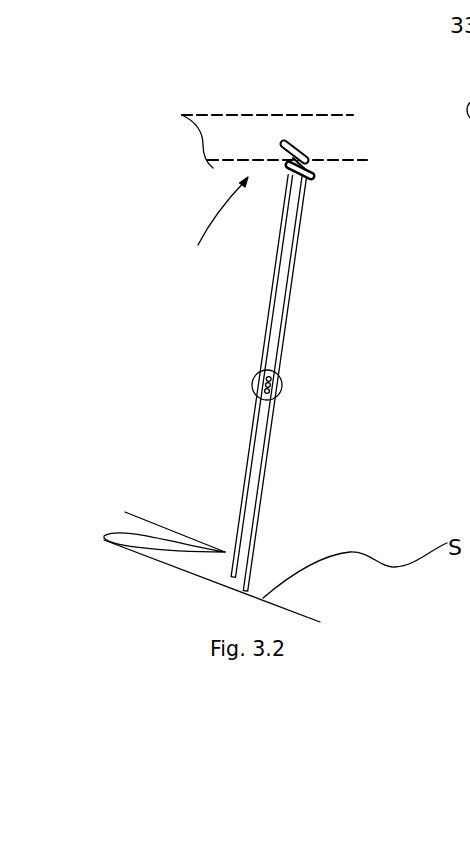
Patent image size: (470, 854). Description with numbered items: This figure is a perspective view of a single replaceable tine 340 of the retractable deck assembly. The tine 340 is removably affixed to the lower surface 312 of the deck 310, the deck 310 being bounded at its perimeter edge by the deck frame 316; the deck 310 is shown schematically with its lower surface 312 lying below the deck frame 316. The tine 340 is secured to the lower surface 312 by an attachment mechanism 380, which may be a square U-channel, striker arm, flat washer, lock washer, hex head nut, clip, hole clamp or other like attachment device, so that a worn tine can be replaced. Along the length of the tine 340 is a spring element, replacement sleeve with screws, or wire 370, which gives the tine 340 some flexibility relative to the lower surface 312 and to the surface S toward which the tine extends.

The deck 310 is at (231, 104).
The lower surface 312 is at (352, 162).
The deck frame 316 is at (222, 133).
The attachment mechanism 380 is at (201, 221).
The tine 340 is at (272, 408).
The wire 370 is at (282, 382).